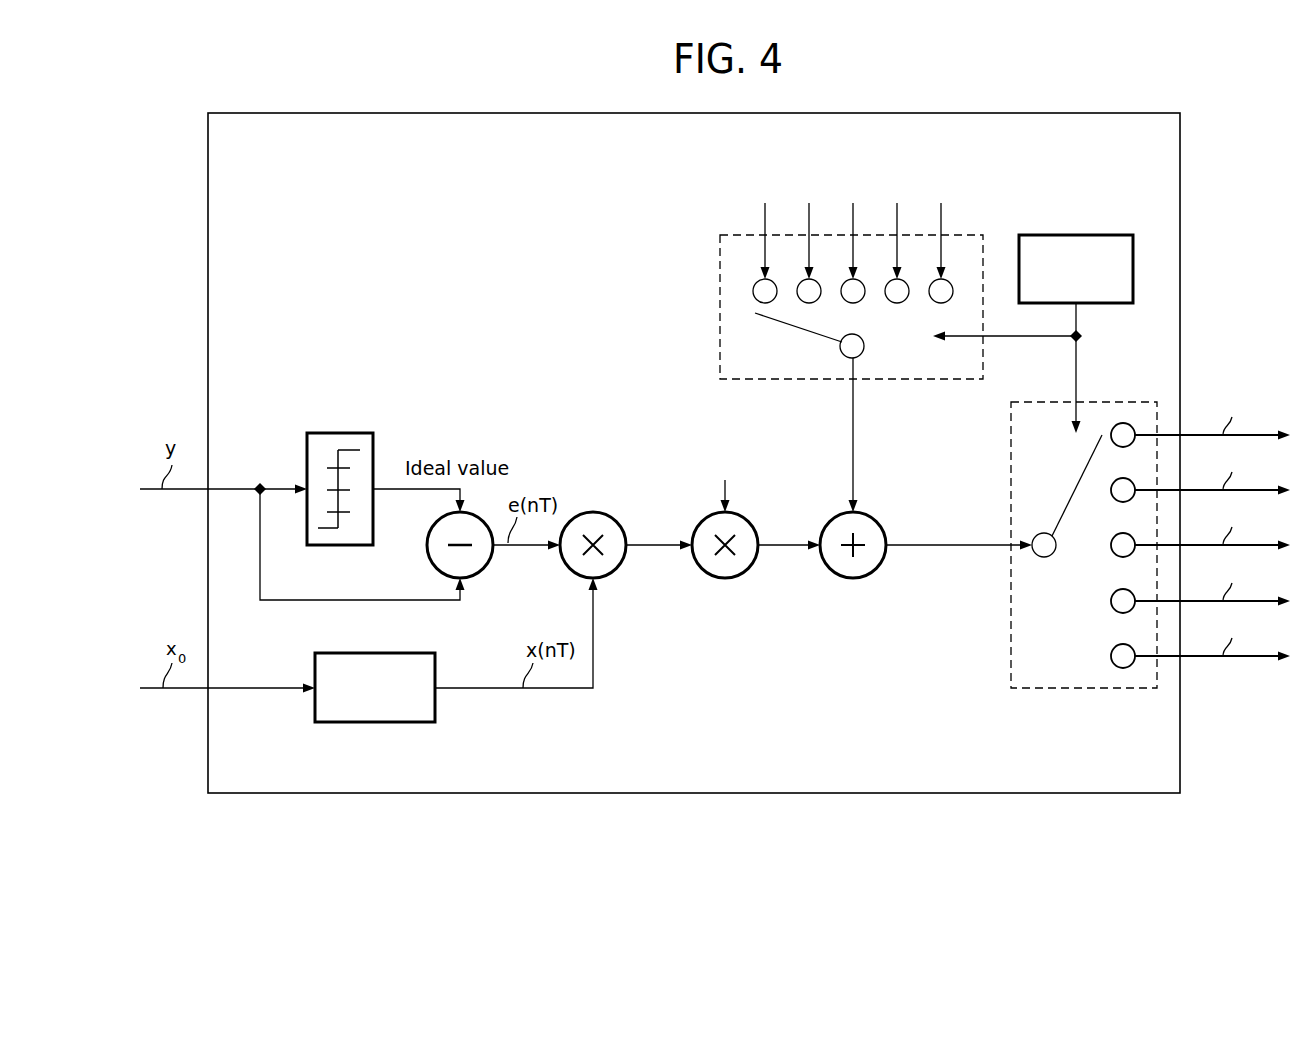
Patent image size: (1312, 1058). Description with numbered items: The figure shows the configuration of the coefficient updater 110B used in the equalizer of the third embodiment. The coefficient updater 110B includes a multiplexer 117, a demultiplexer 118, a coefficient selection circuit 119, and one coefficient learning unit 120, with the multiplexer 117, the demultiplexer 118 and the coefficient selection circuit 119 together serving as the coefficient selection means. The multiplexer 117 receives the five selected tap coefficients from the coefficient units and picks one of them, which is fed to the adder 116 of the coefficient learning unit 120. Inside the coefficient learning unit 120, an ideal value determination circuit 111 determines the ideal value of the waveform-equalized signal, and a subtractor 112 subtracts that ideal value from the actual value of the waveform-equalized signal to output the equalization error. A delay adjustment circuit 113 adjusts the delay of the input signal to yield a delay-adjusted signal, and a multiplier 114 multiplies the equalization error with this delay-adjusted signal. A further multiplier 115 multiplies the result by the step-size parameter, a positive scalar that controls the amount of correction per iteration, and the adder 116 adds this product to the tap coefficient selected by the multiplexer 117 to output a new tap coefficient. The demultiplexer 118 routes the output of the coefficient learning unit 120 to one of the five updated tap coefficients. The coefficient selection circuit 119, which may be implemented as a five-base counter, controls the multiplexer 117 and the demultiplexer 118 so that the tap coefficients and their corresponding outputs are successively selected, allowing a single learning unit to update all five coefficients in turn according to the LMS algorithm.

The coefficient updater 110B is at (1093, 113).
The ideal value determination circuit 111 is at (348, 433).
The subtractor 112 is at (491, 578).
The delay adjustment circuit 113 is at (387, 653).
The multiplier 114 is at (612, 512).
The multiplier 115 is at (749, 578).
The adder 116 is at (882, 578).
The multiplexer 117 is at (720, 338).
The demultiplexer 118 is at (1049, 688).
The coefficient selection circuit 119 is at (1094, 235).
The coefficient learning unit 120 is at (681, 726).